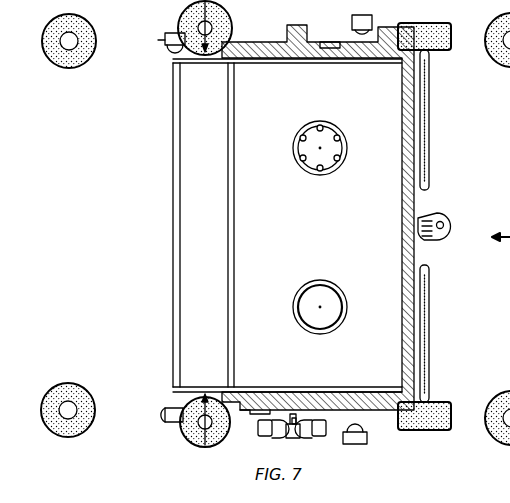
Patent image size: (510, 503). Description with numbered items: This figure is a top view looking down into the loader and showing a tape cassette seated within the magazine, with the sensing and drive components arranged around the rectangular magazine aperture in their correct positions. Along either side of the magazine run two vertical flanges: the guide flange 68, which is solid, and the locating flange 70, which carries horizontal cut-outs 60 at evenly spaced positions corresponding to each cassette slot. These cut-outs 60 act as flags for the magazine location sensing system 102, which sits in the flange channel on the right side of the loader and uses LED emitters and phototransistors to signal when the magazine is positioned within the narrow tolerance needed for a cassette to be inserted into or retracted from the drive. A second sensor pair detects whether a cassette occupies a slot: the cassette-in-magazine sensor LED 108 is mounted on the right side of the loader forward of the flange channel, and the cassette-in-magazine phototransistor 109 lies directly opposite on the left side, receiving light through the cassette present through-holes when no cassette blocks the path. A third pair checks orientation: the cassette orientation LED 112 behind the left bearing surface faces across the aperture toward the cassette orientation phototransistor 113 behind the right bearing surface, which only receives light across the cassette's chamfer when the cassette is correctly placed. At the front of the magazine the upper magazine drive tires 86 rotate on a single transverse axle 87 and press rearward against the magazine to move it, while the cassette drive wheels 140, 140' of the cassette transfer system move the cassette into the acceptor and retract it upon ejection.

The horizontal cut-outs 60 is at (296, 420).
The guide flange 68 is at (312, 42).
The locating flange 70 is at (293, 424).
The upper magazine drive tires 86 is at (432, 24).
The axle 87 is at (432, 305).
The magazine location sensing system 102 is at (256, 430).
The cassette-in-magazine sensor LED 108 is at (368, 20).
The cassette-in-magazine phototransistor 109 is at (367, 440).
The cassette orientation LED 112 is at (164, 412).
The cassette orientation phototransistor 113 is at (160, 36).
The cassette drive wheel 140 is at (135, 409).
The cassette drive wheel 140' is at (158, 41).